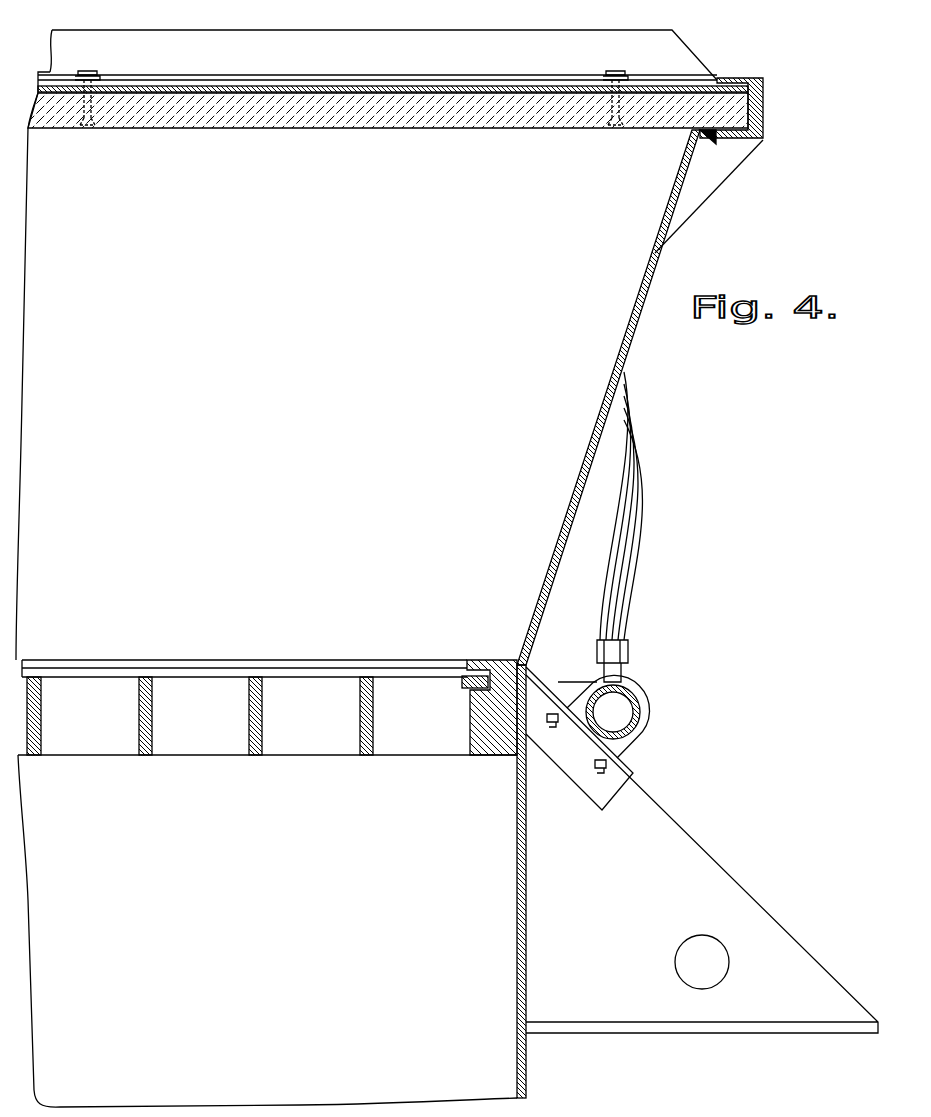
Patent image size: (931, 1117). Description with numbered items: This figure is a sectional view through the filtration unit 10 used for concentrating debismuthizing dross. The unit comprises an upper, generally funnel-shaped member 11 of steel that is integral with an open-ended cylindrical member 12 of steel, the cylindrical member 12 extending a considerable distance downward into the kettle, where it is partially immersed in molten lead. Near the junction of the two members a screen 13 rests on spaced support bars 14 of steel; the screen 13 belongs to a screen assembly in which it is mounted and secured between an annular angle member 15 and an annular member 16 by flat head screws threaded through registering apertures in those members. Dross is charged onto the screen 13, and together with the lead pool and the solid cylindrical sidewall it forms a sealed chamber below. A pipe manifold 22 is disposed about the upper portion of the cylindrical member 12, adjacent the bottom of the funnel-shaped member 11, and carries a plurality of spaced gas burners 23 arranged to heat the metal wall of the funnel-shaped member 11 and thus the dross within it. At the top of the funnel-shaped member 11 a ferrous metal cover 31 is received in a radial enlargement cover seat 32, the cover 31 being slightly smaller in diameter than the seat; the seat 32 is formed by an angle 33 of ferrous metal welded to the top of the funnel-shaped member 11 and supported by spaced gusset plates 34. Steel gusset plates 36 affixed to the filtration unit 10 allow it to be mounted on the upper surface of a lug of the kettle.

The filtration unit 10 is at (540, 639).
The funnel-shaped member 11 is at (645, 318).
The cylindrical member 12 is at (526, 896).
The screen 13 is at (318, 672).
The support bars 14 is at (139, 715).
The annular angle member 15 is at (470, 688).
The annular member 16 is at (467, 668).
The pipe manifold 22 is at (641, 702).
The gas burners 23 is at (617, 652).
The cover 31 is at (735, 78).
The cover seat 32 is at (707, 143).
The angle 33 is at (765, 102).
The gusset plates 34 is at (710, 173).
The gusset plates 36 is at (706, 870).